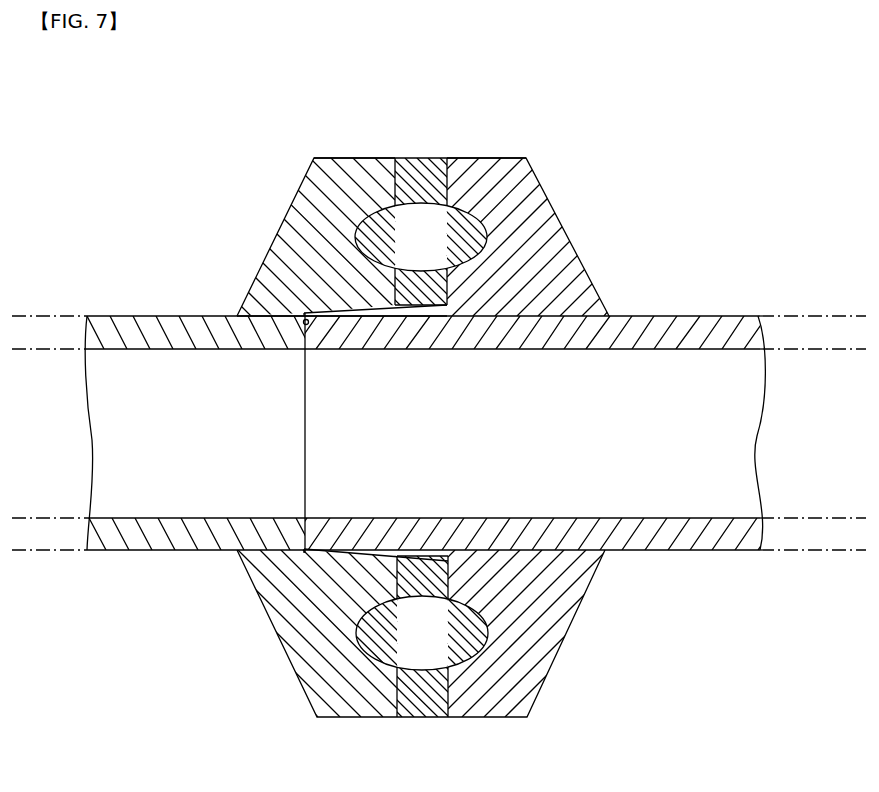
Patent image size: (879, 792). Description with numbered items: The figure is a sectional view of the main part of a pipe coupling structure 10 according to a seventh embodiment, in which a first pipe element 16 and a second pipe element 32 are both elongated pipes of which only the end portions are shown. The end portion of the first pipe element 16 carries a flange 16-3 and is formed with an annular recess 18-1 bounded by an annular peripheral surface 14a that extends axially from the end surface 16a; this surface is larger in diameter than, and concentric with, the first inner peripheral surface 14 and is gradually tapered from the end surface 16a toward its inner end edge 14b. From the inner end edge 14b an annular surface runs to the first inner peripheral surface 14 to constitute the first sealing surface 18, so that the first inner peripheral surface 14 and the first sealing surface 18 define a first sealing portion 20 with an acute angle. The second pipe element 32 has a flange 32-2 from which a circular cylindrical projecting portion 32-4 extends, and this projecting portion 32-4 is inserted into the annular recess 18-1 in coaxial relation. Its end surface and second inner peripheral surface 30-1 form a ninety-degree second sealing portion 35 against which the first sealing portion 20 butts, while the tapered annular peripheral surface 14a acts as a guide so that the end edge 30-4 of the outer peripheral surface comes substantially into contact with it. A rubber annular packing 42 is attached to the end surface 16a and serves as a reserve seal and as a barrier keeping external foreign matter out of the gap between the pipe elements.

The pipe coupling structure 10 is at (439, 358).
The first inner peripheral surface 14 is at (152, 349).
The annular peripheral surface 14a is at (367, 320).
The inner end edge 14b is at (300, 316).
The first pipe element 16 is at (405, 406).
The flange 16-3 is at (345, 157).
The end surface 16a is at (400, 157).
The first sealing surface 18 is at (297, 328).
The annular recess 18-1 is at (375, 302).
The first sealing portion 20 is at (300, 333).
The second inner peripheral surface 30-1 is at (570, 350).
The end edge of outer peripheral surface 30-4 is at (303, 311).
The second pipe element 32 is at (486, 396).
The flange 32-2 is at (472, 157).
The projecting portion 32-4 is at (465, 342).
The second sealing portion 35 is at (315, 340).
The annular packing 42 is at (427, 157).